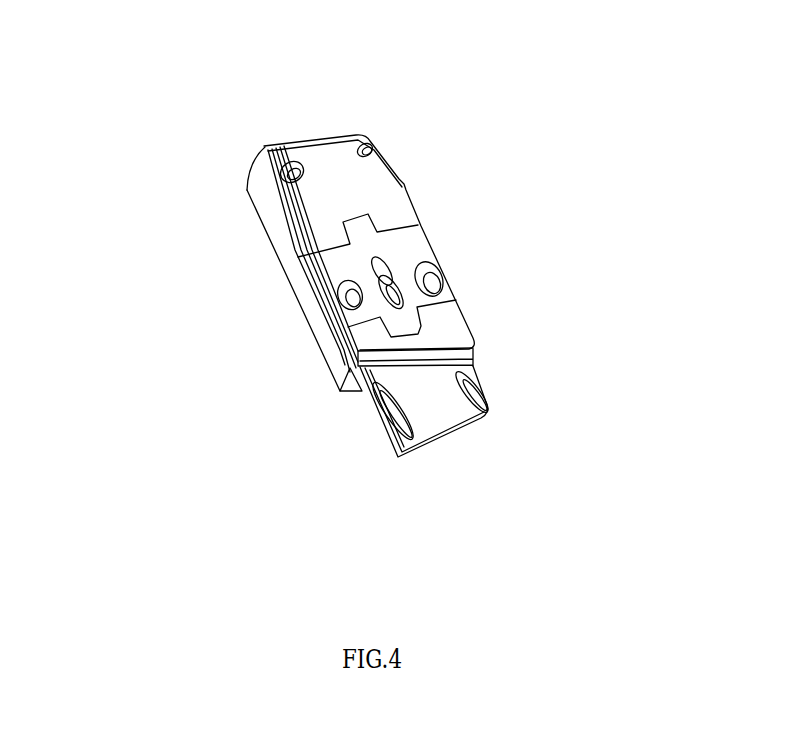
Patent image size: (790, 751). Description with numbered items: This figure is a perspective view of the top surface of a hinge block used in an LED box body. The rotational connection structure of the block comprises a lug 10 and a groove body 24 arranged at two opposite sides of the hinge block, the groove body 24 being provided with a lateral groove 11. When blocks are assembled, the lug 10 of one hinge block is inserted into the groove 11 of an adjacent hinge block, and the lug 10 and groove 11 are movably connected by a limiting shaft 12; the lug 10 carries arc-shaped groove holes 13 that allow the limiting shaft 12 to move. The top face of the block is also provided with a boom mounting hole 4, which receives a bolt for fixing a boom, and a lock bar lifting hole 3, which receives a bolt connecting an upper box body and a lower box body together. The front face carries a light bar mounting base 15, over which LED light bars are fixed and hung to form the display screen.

The lug 10 is at (340, 391).
The groove 11 is at (252, 192).
The groove body 24 is at (283, 249).
The limiting shaft 12 is at (342, 131).
The boom mounting hole 4 is at (338, 298).
The lock bar lifting hole 3 is at (392, 280).
The light bar mounting base 15 is at (476, 336).
The arc-shaped groove hole 13 is at (470, 426).